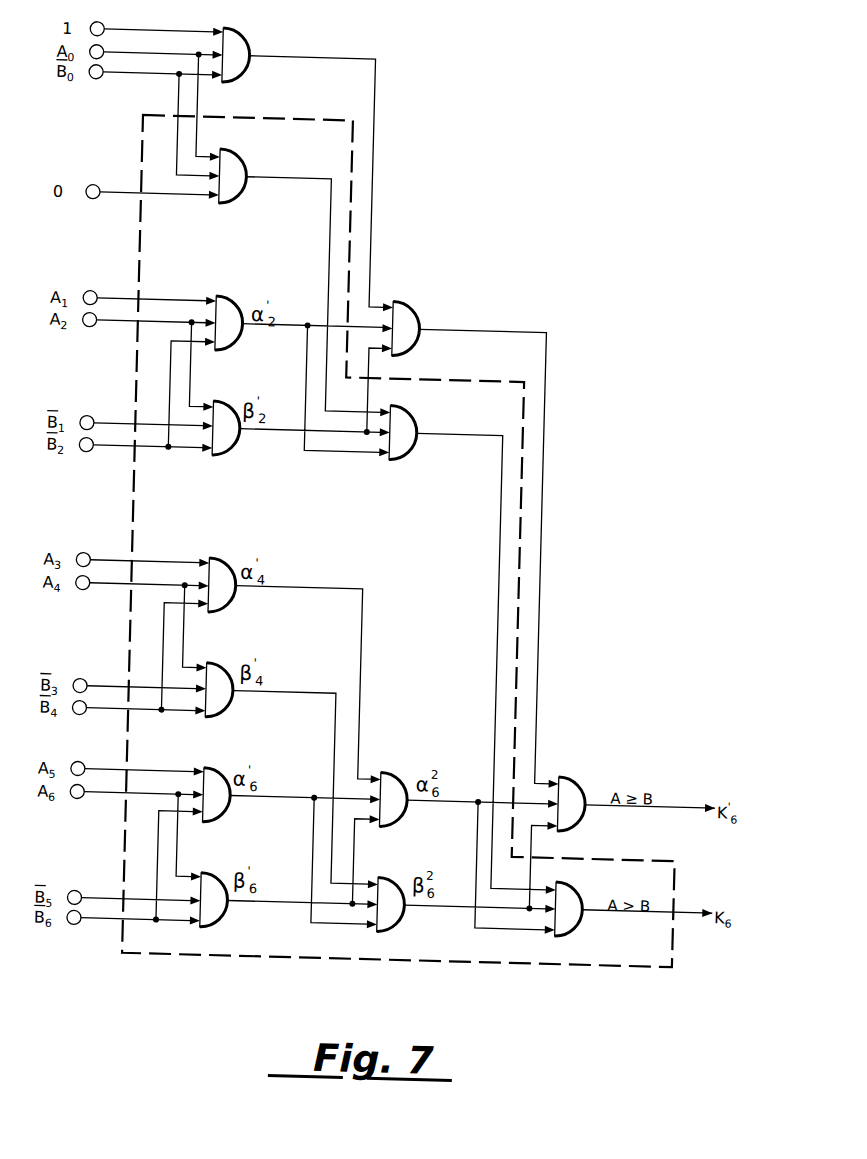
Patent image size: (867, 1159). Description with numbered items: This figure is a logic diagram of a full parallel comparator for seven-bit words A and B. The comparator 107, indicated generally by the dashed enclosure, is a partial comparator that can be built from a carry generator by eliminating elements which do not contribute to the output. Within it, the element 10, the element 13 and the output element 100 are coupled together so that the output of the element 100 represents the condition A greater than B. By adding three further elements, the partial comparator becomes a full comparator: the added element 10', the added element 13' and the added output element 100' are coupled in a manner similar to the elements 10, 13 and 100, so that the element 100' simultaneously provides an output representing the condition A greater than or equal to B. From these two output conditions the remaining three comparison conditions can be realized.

The added logic element 10' is at (252, 51).
The logic element 10 is at (245, 168).
The added logic element 13' is at (421, 322).
The logic element 13 is at (414, 426).
The added output element 100' is at (586, 794).
The output element 100 is at (580, 900).
The comparator 107 is at (605, 957).